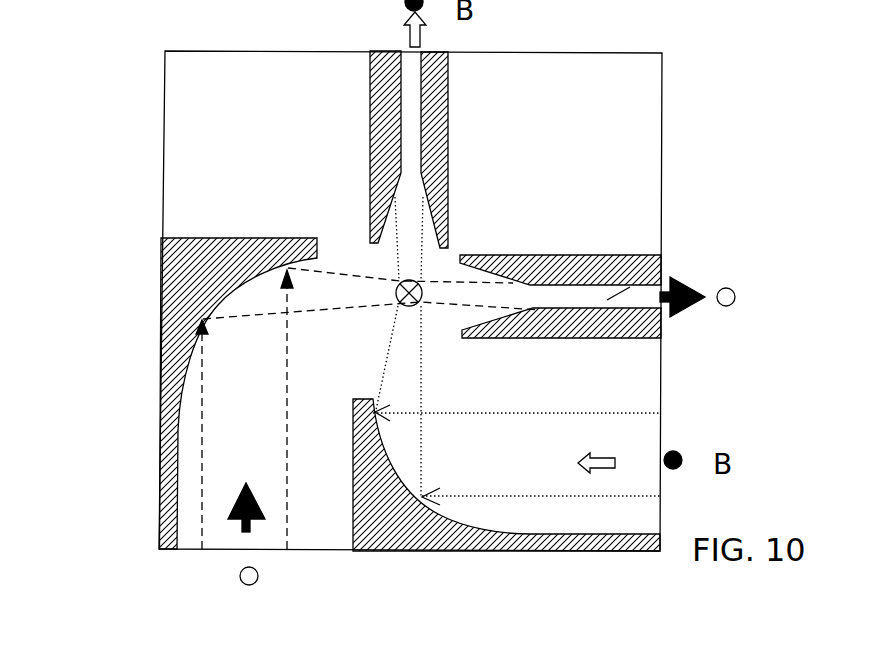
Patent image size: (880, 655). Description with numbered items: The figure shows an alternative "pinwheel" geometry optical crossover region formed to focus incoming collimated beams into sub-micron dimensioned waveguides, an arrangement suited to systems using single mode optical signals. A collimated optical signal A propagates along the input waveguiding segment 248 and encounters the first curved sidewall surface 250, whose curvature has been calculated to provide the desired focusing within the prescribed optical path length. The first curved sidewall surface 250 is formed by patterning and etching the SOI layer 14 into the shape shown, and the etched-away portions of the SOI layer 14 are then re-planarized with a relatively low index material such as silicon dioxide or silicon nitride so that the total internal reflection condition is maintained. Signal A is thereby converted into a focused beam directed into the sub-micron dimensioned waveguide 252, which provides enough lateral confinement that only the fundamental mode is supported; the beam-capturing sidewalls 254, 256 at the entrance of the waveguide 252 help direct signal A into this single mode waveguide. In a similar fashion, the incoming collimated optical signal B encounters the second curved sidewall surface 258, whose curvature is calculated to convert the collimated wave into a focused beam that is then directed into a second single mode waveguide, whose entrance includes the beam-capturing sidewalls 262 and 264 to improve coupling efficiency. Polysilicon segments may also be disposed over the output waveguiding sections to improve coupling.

The SOI layer 14 is at (618, 130).
The input waveguiding segment 248 is at (197, 468).
The first curved sidewall surface 250 is at (218, 305).
The sub-micron dimensioned waveguide 252 is at (661, 247).
The beam-capturing sidewall 254 is at (500, 262).
The beam-capturing sidewall 256 is at (490, 320).
The second curved sidewall surface 258 is at (545, 523).
The beam-capturing sidewall 262 is at (387, 212).
The beam-capturing sidewall 264 is at (430, 212).